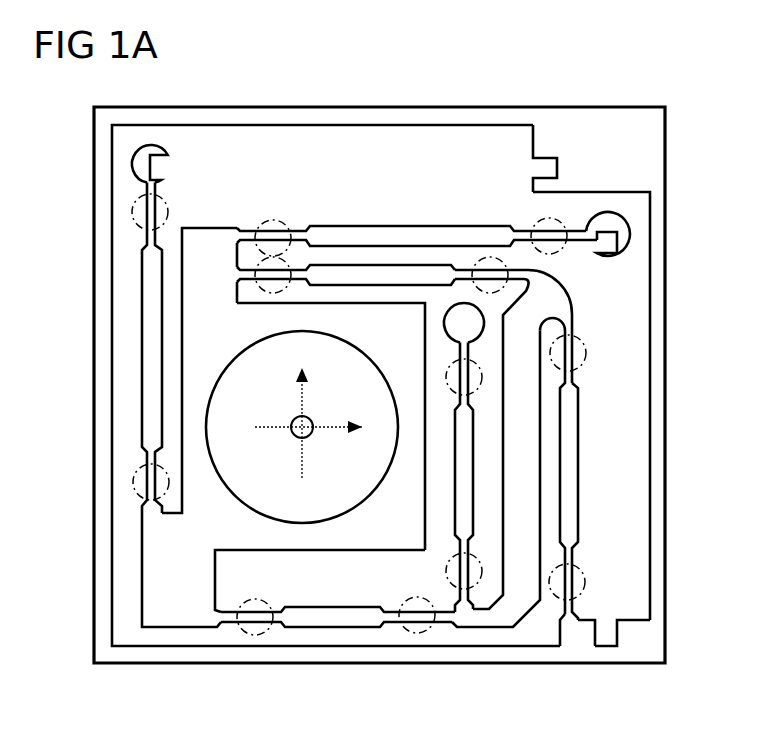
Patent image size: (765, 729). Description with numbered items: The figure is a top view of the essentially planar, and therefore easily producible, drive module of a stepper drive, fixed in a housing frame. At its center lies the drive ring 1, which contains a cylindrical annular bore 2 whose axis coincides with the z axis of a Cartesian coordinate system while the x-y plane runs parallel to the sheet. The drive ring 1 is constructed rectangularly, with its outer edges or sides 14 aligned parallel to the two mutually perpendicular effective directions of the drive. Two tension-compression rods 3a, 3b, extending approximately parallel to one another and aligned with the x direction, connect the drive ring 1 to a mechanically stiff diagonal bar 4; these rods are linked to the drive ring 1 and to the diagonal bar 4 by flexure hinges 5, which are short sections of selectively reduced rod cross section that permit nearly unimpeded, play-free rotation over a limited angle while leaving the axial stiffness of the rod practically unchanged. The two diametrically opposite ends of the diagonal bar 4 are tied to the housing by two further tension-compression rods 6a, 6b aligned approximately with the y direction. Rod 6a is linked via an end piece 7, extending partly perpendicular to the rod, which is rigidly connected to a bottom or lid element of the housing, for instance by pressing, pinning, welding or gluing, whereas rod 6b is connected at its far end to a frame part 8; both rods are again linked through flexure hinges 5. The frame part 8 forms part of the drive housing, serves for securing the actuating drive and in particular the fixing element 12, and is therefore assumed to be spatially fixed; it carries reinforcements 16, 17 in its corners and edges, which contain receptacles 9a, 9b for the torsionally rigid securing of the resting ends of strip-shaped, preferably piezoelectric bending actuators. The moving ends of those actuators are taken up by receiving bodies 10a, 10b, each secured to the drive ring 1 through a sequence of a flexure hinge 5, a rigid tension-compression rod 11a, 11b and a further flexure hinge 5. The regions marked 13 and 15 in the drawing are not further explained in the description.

The drive ring 1 is at (358, 318).
The cylindrical annular bore 2 is at (252, 360).
The tension-compression rod 3a is at (420, 272).
The tension-compression rod 3b is at (333, 617).
The diagonal bar 4 is at (527, 452).
The flexure hinge 5 is at (128, 214).
The tension-compression rod 6a is at (460, 498).
The tension-compression rod 6b is at (580, 472).
The end piece 7 is at (447, 323).
The frame part 8 is at (503, 655).
The receptacle 9a is at (605, 635).
The receptacle 9b is at (543, 165).
The receiving body 10a is at (622, 228).
The receiving body 10b is at (131, 163).
The rigid tension-compression rod 11a is at (336, 233).
The rigid tension-compression rod 11b is at (147, 362).
The fixing element 12 is at (578, 637).
The left conductor block 13 is at (208, 237).
The edges or sides 14 is at (262, 551).
The lower left conductor region 15 is at (173, 615).
The reinforcement 16 is at (658, 638).
The reinforcement 17 is at (615, 122).